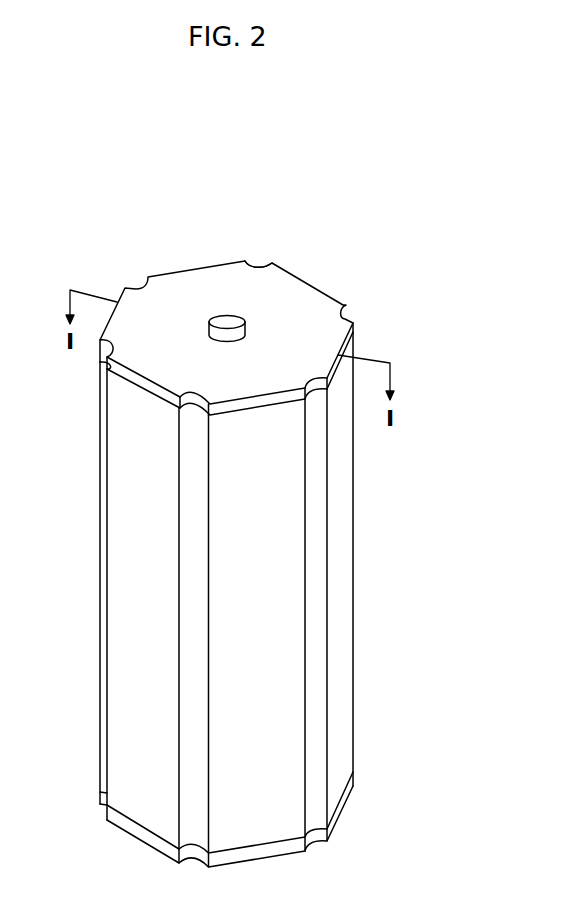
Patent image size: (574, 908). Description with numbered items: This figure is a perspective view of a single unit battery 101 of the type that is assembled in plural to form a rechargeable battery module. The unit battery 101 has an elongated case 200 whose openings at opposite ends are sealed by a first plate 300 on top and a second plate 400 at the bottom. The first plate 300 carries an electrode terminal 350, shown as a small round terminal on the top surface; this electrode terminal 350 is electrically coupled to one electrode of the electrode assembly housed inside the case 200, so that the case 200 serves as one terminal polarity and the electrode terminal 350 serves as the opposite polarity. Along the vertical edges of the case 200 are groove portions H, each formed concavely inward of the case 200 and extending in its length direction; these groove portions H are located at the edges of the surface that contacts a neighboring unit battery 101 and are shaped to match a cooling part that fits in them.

The unit battery 101 is at (240, 167).
The case 200 is at (347, 568).
The first plate 300 is at (295, 290).
The electrode terminal 350 is at (225, 321).
The second plate 400 is at (317, 838).
The groove portion H is at (266, 264).